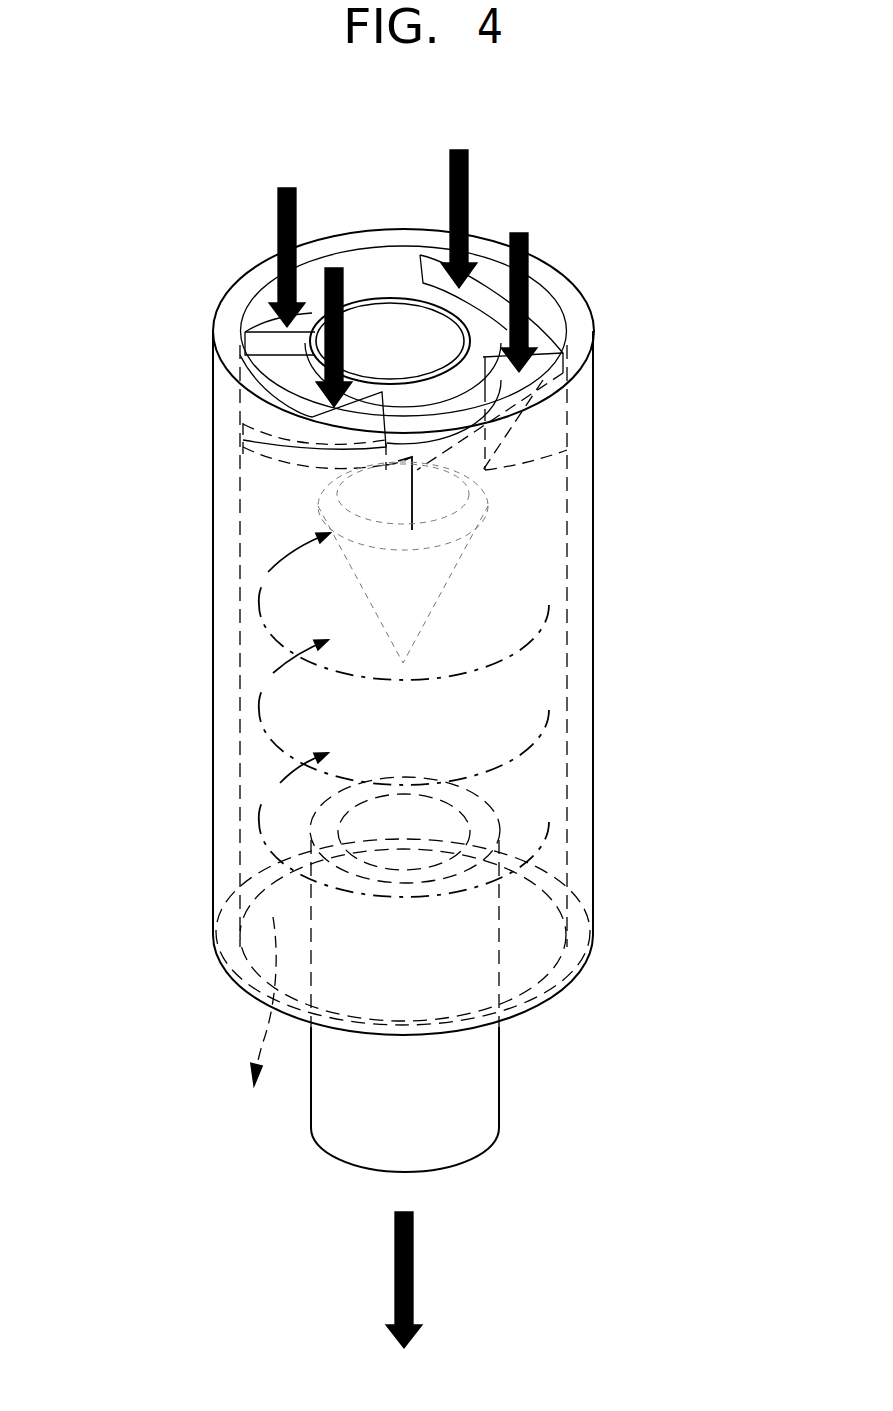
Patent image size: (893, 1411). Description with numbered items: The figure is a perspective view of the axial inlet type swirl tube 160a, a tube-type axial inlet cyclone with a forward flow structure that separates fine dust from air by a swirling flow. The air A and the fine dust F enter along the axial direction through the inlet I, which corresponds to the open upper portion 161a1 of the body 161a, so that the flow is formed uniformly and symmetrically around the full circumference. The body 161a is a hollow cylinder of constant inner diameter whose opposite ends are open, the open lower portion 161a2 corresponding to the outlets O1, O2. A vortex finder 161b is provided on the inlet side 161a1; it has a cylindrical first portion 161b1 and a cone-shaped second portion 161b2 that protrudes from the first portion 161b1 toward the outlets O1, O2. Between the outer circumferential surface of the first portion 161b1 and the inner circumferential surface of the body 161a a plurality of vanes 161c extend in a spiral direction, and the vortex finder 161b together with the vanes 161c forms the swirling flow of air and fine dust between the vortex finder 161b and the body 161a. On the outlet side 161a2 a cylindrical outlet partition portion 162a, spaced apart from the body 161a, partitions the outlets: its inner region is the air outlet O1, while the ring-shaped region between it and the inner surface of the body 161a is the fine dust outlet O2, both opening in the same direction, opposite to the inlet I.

The axial inlet type swirl tube 160a is at (189, 174).
The body 161a is at (695, 327).
The inlet side of the body 161a1 is at (580, 342).
The outlet side of the body 161a2 is at (575, 945).
The vortex finder 161b is at (103, 500).
The first portion 161b1 is at (345, 467).
The second portion 161b2 is at (357, 582).
The vane 161c is at (245, 343).
The outlet partition portion 162a is at (498, 1090).
The inlet I is at (400, 250).
The air outlet O1 is at (367, 1173).
The fine dust outlet O2 is at (243, 1002).
The air A is at (431, 750).
The fine dust F is at (254, 1016).